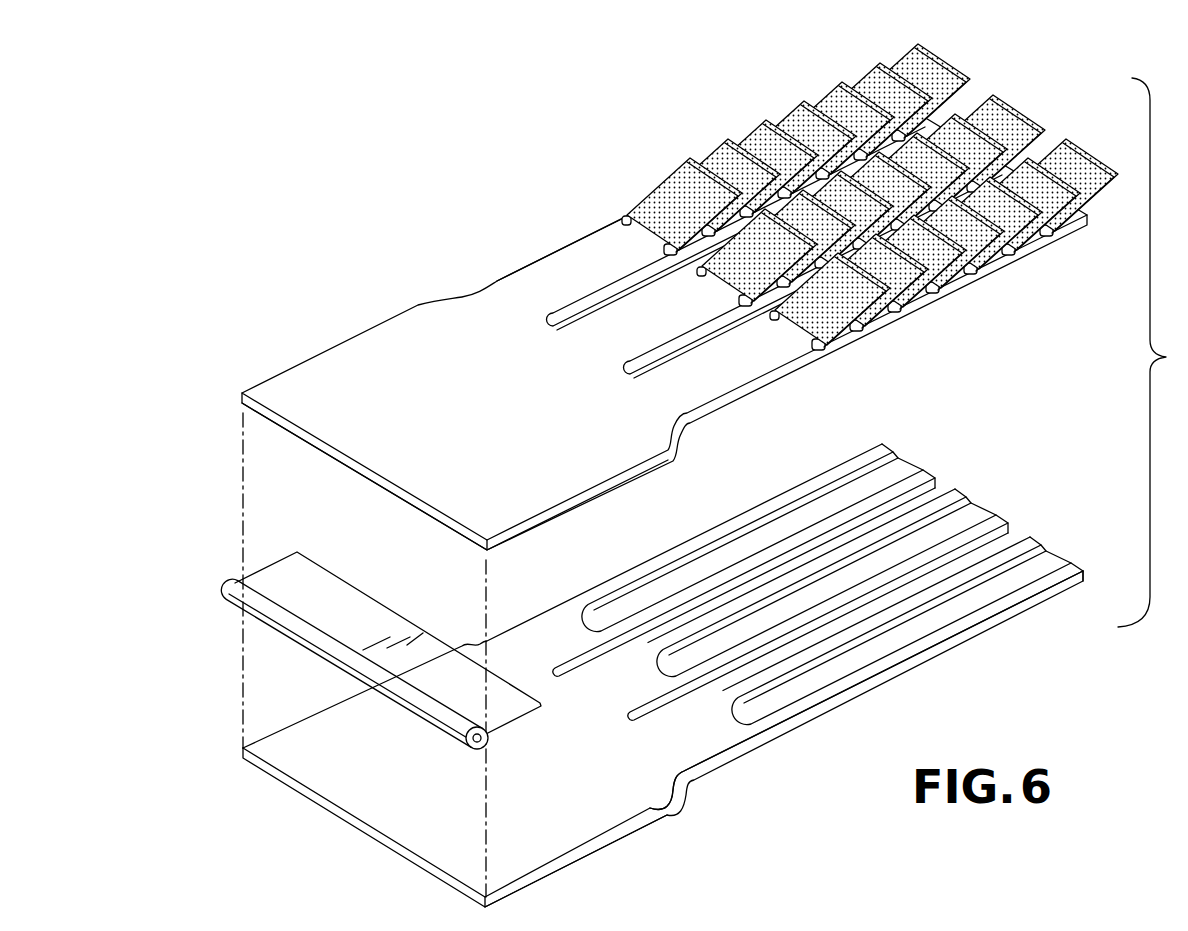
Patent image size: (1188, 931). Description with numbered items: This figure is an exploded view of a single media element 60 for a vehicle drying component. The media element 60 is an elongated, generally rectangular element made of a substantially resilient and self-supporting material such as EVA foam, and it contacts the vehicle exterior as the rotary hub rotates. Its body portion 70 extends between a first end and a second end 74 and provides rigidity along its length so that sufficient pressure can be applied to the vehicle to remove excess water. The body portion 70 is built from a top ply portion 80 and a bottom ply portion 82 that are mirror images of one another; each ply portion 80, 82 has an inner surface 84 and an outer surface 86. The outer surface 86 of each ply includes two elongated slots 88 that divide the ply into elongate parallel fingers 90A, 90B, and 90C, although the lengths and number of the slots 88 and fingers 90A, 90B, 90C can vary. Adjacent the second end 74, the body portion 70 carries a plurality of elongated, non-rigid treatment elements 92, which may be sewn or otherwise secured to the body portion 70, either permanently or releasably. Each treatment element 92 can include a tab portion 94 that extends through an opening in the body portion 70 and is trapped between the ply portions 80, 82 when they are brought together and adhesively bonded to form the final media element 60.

The media element 60 is at (458, 222).
The body portion 70 is at (495, 280).
The top ply portion 80 is at (347, 367).
The bottom ply portion 82 is at (648, 807).
The inner surface 84 is at (445, 528).
The outer surface 86 is at (432, 421).
The second end 74 is at (300, 636).
The elongated slots 88 is at (770, 617).
The finger 90A is at (1038, 600).
The finger 90B is at (972, 522).
The finger 90C is at (905, 463).
The treatment elements 92 is at (940, 68).
The tab portion 94 is at (793, 322).